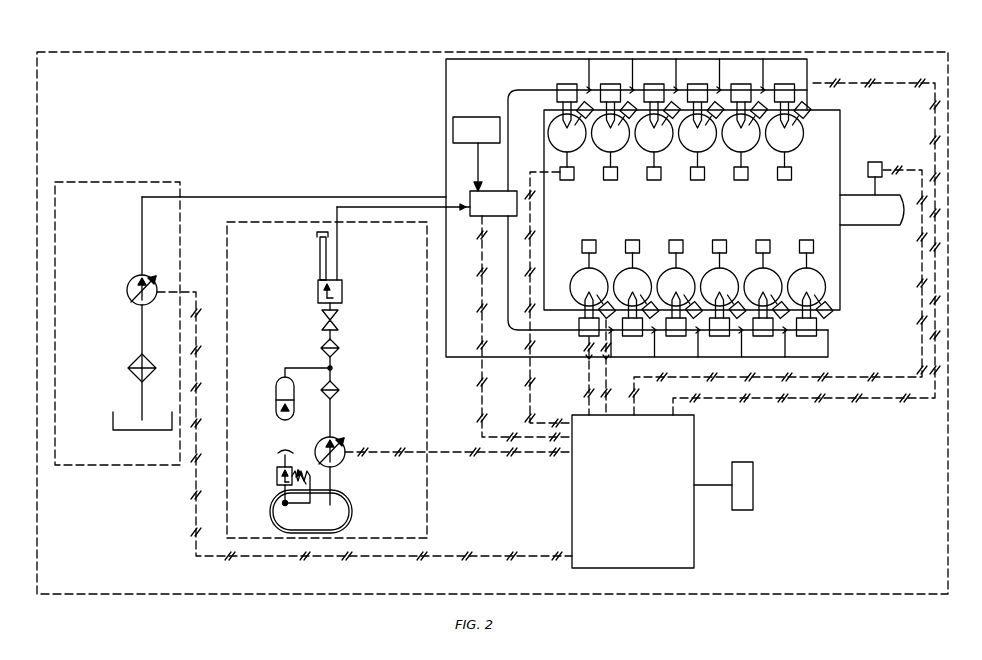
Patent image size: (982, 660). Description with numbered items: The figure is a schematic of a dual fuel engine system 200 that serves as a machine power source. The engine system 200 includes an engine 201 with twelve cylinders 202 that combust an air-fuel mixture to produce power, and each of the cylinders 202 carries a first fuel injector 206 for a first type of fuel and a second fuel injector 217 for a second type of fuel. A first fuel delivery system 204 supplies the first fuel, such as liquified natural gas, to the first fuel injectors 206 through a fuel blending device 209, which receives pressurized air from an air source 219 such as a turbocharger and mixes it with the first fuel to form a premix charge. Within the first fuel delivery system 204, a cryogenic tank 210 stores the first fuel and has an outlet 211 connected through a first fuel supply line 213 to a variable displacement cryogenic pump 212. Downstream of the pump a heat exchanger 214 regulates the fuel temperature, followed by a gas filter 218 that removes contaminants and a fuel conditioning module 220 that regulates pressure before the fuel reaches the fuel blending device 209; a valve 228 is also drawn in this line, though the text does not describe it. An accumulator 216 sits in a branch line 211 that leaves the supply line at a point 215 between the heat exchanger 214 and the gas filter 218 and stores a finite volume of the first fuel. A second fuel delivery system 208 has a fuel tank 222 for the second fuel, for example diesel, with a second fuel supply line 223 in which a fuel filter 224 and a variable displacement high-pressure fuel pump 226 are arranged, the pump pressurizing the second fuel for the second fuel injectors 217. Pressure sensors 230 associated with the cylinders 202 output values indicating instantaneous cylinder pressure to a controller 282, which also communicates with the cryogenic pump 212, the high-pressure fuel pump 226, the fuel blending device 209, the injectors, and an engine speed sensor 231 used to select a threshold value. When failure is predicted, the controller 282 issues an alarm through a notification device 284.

The engine system 200 is at (101, 54).
The engine 201 is at (840, 120).
The cylinders 202 is at (805, 140).
The first fuel delivery system 204 is at (257, 223).
The first fuel injector 206 is at (810, 292).
The second fuel delivery system 208 is at (125, 183).
The fuel blending device 209 is at (493, 203).
The cryogenic tank 210 is at (352, 512).
The outlet 211 is at (300, 366).
The variable displacement cryogenic pump 212 is at (343, 465).
The first fuel supply line 213 is at (388, 210).
The heat exchanger 214 is at (340, 390).
The point 215 is at (335, 368).
The accumulator 216 is at (276, 415).
The second fuel injector 217 is at (812, 118).
The gas filter 218 is at (340, 348).
The air source 219 is at (476, 154).
The fuel conditioning module 220 is at (343, 290).
The fuel tank 222 is at (113, 420).
The second fuel supply line 223 is at (210, 196).
The fuel filter 224 is at (128, 368).
The variable displacement high-pressure fuel pump 226 is at (127, 290).
The shutoff valve 228 is at (340, 321).
The pressure sensors 230 is at (567, 181).
The engine speed sensor 231 is at (876, 162).
The controller 282 is at (548, 323).
The notification device 284 is at (754, 485).